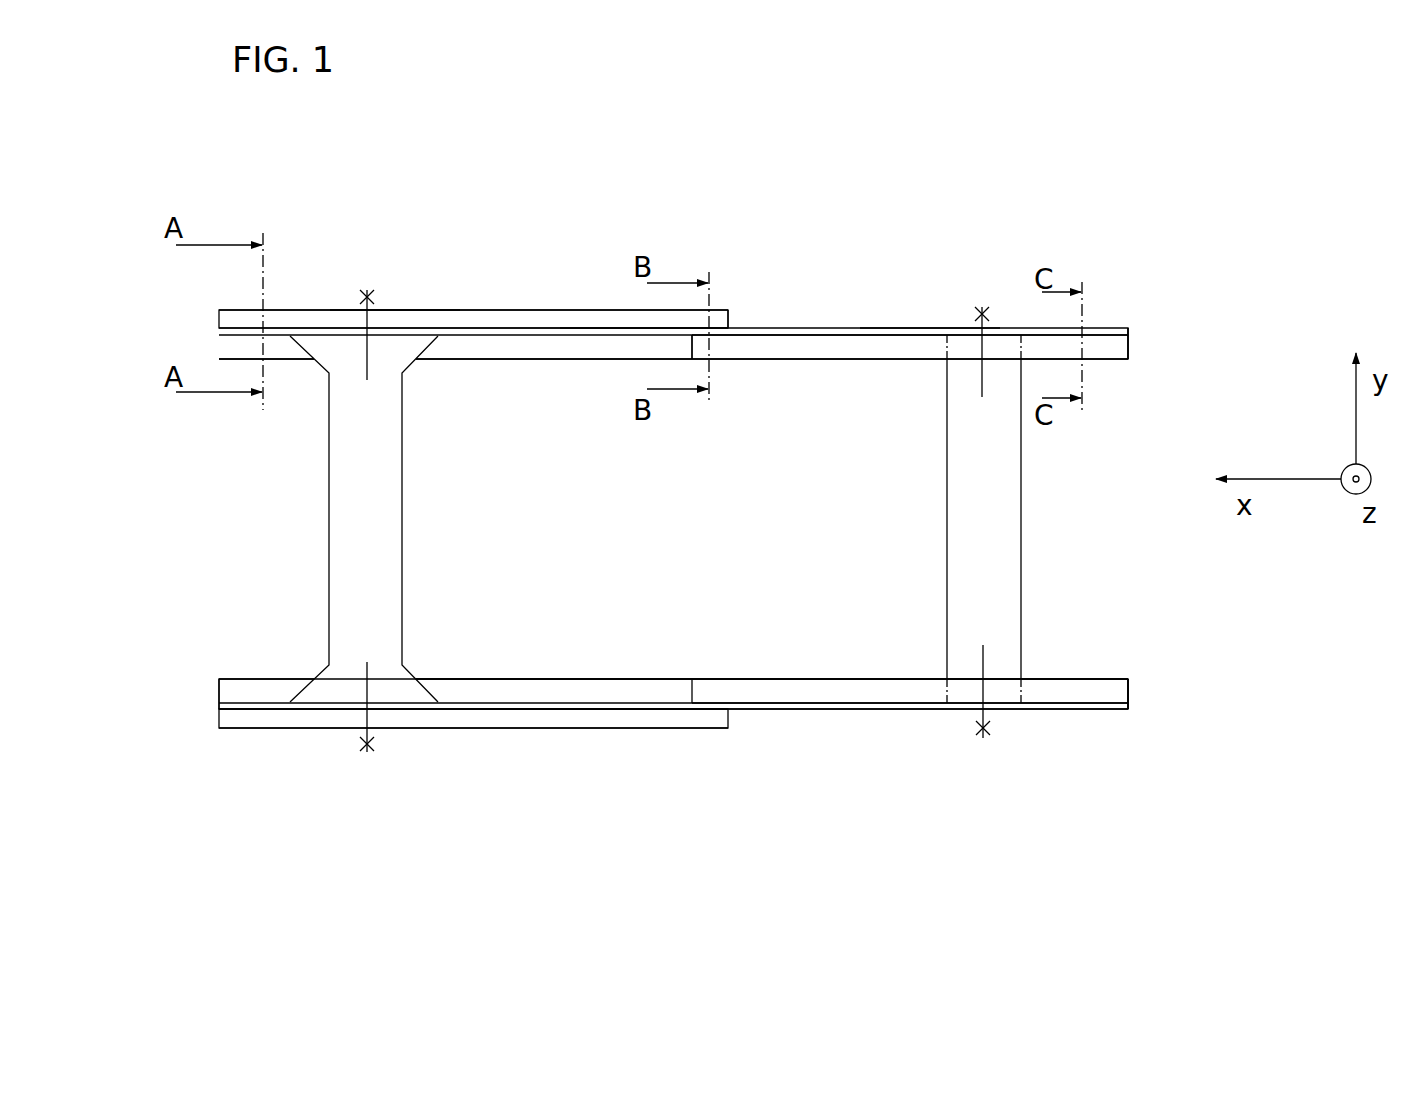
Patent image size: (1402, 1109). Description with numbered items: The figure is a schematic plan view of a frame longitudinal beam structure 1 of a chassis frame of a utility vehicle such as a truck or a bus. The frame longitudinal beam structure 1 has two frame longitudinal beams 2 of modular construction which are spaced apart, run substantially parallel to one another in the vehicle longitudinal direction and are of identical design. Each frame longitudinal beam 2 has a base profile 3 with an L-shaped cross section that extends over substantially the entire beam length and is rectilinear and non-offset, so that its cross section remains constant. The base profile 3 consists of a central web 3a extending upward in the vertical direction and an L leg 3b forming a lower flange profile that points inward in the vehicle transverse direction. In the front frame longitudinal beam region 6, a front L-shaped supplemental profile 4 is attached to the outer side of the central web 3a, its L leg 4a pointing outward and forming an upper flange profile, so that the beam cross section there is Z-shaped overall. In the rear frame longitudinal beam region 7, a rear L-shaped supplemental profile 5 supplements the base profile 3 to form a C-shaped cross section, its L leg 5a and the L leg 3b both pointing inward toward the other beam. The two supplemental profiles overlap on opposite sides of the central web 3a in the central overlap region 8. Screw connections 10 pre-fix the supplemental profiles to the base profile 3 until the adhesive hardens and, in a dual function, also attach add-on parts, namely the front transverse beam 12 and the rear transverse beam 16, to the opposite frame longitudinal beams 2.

The frame longitudinal beam structure 1 is at (462, 231).
The frame longitudinal beam 2 is at (1148, 336).
The base profile 3 is at (848, 324).
The central web 3a is at (778, 327).
The L leg 3b is at (597, 346).
The front L-shaped supplemental profile 4 is at (505, 311).
The L leg 4a is at (568, 320).
The rear L-shaped supplemental profile 5 is at (860, 353).
The L leg 5a is at (913, 352).
The front frame longitudinal beam region 6 is at (397, 271).
The rear frame longitudinal beam region 7 is at (928, 302).
The overlap region 8 is at (708, 246).
The screw connection 10 is at (367, 295).
The front transverse beam 12 is at (357, 533).
The rear transverse beam 16 is at (998, 518).